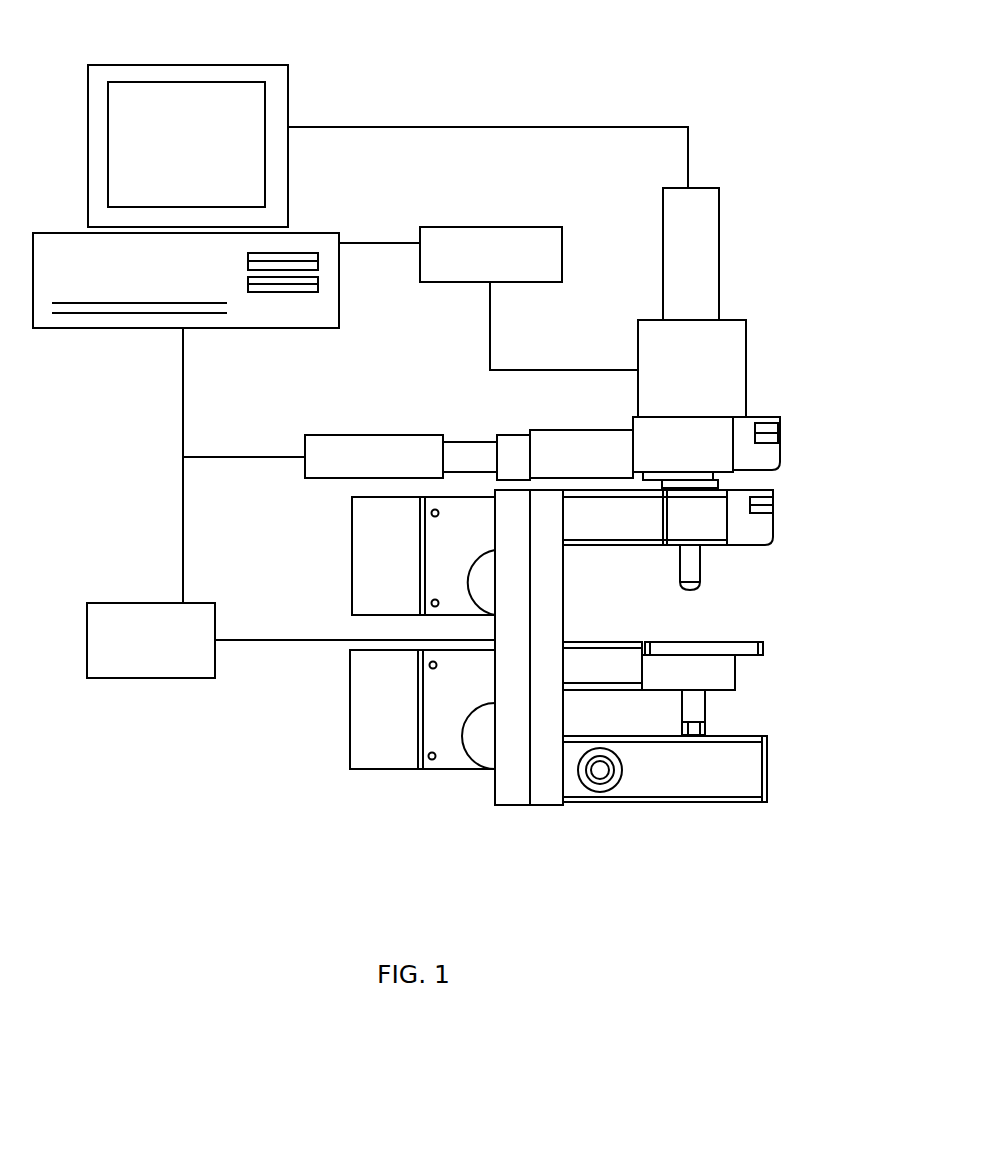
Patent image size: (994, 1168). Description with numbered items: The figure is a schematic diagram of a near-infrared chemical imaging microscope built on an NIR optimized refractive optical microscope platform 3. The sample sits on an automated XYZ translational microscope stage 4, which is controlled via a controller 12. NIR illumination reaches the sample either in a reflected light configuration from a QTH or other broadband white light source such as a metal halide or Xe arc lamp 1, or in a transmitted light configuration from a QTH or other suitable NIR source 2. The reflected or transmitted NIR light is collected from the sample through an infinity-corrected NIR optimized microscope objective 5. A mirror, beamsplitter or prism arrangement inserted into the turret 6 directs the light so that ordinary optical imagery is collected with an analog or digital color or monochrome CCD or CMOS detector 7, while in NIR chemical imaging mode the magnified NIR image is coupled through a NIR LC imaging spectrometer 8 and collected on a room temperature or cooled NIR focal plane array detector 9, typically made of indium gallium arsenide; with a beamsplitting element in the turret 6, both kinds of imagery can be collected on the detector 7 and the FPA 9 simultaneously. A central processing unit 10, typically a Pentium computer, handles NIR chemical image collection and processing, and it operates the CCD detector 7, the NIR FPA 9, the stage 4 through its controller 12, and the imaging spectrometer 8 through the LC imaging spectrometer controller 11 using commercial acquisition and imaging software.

The broadband white light source 1 is at (352, 563).
The NIR source 2 is at (350, 725).
The refractive optical microscope platform 3 is at (767, 782).
The automated XYZ translational microscope stage 4 is at (740, 642).
The infinity-corrected NIR optimized microscope objective 5 is at (773, 525).
The turret 6 is at (780, 458).
The CCD or CMOS detector 7 is at (372, 435).
The NIR LC imaging spectrometer 8 is at (746, 363).
The NIR focal plane array detector 9 is at (719, 223).
The central processing unit 10 is at (110, 65).
The LC imaging spectrometer controller 11 is at (510, 227).
The controller 12 is at (135, 603).